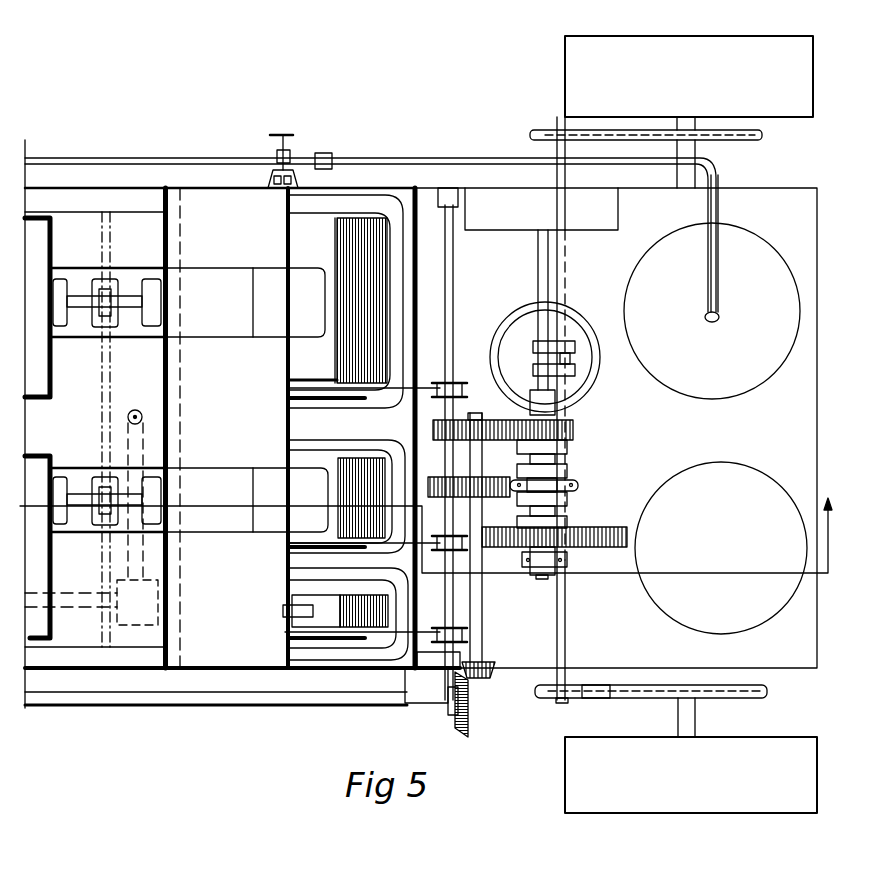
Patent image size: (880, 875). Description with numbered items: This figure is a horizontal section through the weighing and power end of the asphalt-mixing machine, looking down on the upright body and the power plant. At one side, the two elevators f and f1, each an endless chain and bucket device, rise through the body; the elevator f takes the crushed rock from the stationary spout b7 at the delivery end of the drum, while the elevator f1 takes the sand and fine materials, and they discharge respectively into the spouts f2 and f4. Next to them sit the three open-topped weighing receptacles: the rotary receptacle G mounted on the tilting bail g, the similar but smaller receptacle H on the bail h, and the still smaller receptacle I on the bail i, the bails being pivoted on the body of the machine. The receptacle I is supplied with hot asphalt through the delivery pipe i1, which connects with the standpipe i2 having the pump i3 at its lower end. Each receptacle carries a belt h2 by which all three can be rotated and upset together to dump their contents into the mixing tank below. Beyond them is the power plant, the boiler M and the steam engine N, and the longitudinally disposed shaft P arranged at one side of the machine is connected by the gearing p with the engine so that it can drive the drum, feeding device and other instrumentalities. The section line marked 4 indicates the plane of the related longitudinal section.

The longitudinally disposed shaft P is at (252, 706).
The boiler M is at (615, 424).
The section line 4 is at (426, 524).
The stationary spout b7 is at (40, 410).
The elevator f is at (72, 275).
The elevator f1 is at (78, 478).
The spout f2 is at (205, 280).
The spout f4 is at (212, 482).
The standpipe i2 is at (135, 410).
The pump i3 is at (145, 611).
The tilting bail g is at (335, 205).
The rotary receptacle G is at (372, 245).
The bail h is at (305, 450).
The rotary receptacle H is at (363, 500).
The rotary receptacle I is at (387, 635).
The bail i is at (327, 652).
The delivery pipe i1 is at (300, 618).
The gearing p is at (455, 296).
The belt h2 is at (440, 385).
The steam engine N is at (527, 408).